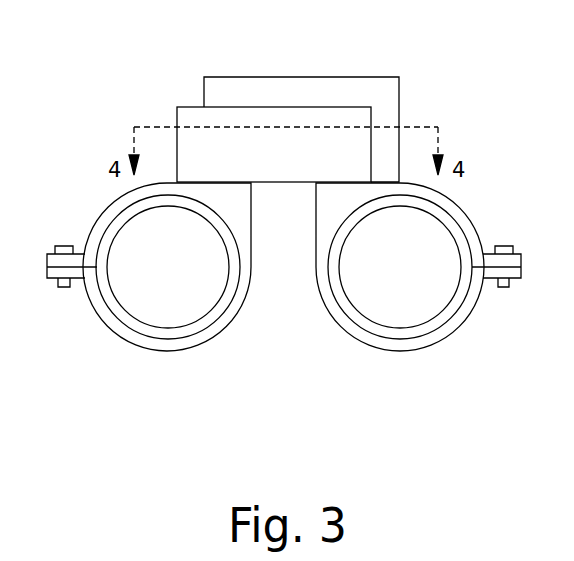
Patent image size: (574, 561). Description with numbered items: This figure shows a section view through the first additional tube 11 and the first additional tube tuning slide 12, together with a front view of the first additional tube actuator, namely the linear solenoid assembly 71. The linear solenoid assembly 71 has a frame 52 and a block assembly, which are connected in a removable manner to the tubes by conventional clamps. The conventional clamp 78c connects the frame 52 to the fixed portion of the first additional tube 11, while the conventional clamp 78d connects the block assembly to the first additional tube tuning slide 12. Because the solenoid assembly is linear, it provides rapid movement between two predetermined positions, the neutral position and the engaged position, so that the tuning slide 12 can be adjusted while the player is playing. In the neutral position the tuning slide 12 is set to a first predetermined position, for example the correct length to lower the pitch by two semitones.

The frame 52 is at (386, 98).
The linear solenoid assembly 71 is at (192, 117).
The first additional tube tuning slide 12 is at (137, 298).
The first additional tube 11 is at (433, 298).
The conventional clamp 78d is at (213, 328).
The conventional clamp 78c is at (347, 328).